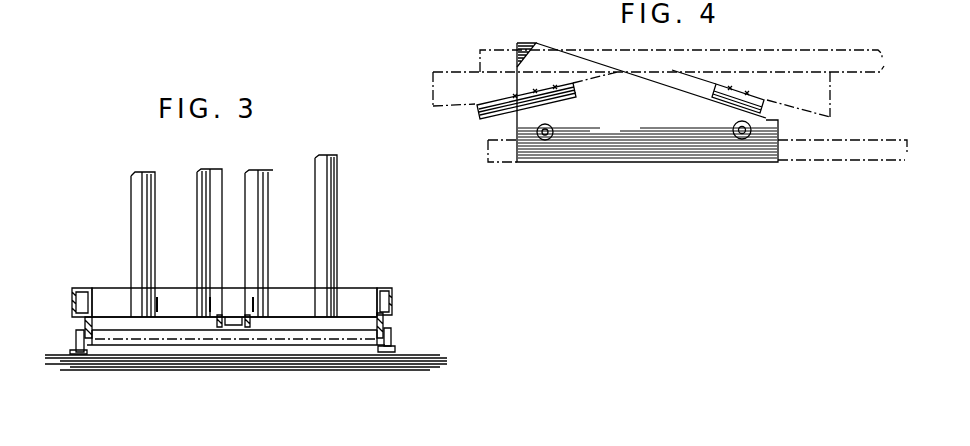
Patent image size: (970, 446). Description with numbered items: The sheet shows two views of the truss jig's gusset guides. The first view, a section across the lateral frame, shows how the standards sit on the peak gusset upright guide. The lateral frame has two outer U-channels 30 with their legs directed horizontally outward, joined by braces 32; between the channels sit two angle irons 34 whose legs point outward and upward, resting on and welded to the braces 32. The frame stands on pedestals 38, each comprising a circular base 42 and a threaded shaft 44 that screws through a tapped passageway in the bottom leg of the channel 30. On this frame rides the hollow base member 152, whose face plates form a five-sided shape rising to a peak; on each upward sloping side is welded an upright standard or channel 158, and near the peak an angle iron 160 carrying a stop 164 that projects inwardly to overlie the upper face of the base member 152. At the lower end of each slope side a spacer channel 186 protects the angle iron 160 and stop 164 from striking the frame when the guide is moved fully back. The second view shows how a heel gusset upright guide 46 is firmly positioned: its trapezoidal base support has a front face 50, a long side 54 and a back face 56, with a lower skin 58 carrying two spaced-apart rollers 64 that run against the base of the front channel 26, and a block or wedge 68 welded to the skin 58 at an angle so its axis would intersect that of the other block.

In FIG. 3, the upright standard or channel 158 is at (131, 227).
In FIG. 3, the angle iron 160 is at (196, 193).
In FIG. 3, the stop 164 is at (250, 187).
In FIG. 3, the base member 152 is at (372, 288).
In FIG. 3, the spacer channel 186 is at (94, 271).
In FIG. 3, the U-channel 30 is at (85, 319).
In FIG. 3, the angle iron 34 is at (215, 322).
In FIG. 3, the pedestal 38 is at (74, 332).
In FIG. 3, the threaded shaft 44 is at (390, 334).
In FIG. 3, the circular base 42 is at (399, 348).
In FIG. 3, the brace 32 is at (305, 331).
In FIG. 4, the front channel 26 is at (878, 62).
In FIG. 4, the face 50 is at (568, 162).
In FIG. 4, the heel gusset upright guide 46 is at (537, 33).
In FIG. 4, the back face 56 is at (582, 64).
In FIG. 4, the block or wedge 68 is at (578, 90).
In FIG. 4, the long side 54 is at (515, 119).
In FIG. 4, the roller 64 is at (544, 124).
In FIG. 4, the lower skin 58 is at (693, 124).